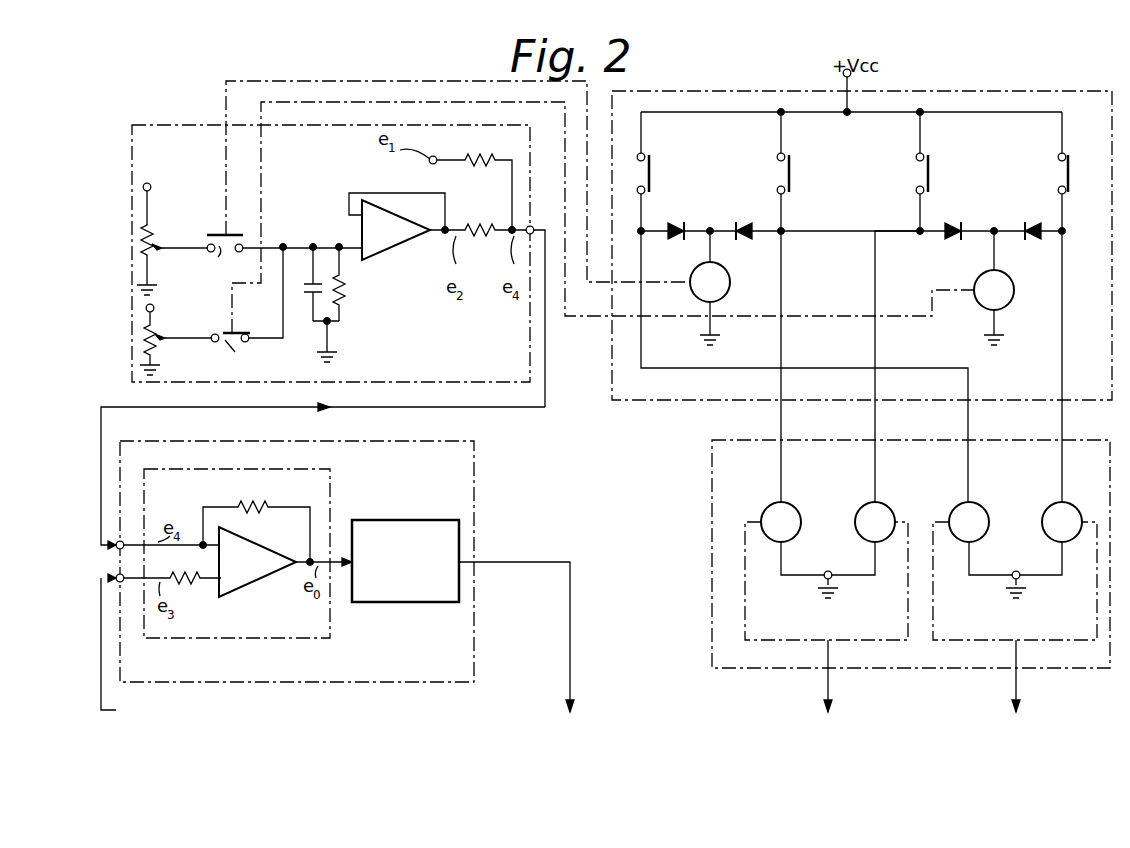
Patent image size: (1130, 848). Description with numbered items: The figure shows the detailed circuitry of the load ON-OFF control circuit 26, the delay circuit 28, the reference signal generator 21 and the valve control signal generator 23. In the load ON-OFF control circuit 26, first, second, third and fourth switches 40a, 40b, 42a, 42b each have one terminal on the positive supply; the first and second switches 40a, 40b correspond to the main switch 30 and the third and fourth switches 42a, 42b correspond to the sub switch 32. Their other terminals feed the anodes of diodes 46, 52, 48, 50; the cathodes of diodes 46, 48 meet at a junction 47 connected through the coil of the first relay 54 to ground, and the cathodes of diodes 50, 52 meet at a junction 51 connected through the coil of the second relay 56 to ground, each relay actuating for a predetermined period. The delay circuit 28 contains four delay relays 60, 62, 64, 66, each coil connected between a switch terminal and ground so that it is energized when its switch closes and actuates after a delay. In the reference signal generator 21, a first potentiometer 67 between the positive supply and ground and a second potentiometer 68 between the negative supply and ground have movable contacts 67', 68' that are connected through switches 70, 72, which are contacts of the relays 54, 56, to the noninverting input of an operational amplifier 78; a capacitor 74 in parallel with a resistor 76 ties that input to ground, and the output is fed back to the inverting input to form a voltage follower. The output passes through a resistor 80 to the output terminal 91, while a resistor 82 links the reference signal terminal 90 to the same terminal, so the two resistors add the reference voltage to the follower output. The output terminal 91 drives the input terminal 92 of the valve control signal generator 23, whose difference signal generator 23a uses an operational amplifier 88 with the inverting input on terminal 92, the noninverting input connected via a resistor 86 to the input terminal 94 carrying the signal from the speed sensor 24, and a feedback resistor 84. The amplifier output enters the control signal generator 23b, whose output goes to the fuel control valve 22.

The reference signal generator 21 is at (157, 123).
The valve control signal generator 23 is at (474, 442).
The difference signal generator 23a is at (256, 638).
The control signal generator 23b is at (392, 602).
The load ON-OFF control circuit 26 is at (1022, 88).
The delay circuit 28 is at (1076, 437).
The first switch 40a is at (844, 176).
The second switch 40b is at (980, 176).
The third switch 42a is at (706, 176).
The fourth switch 42b is at (1070, 170).
The semiconductor diode 46 is at (742, 242).
The junction 47 is at (712, 226).
The semiconductor diode 48 is at (674, 242).
The semiconductor diode 50 is at (1022, 242).
The junction 51 is at (996, 226).
The semiconductor diode 52 is at (952, 242).
The first relay 54 is at (727, 290).
The second relay 56 is at (1007, 310).
The delay relay 60 is at (794, 536).
The delay relay 62 is at (888, 505).
The delay relay 64 is at (980, 534).
The delay relay 66 is at (1077, 507).
The first potentiometer 67 is at (162, 224).
The movable contact 67' is at (179, 264).
The second potentiometer 68 is at (175, 332).
The movable contact 68' is at (184, 324).
The switch 70 is at (225, 261).
The switch 72 is at (239, 355).
The capacitor 74 is at (300, 322).
The resistor 76 is at (349, 289).
The operational amplifier 78 is at (398, 254).
The resistor 80 is at (480, 238).
The resistor 82 is at (470, 156).
The resistor 84 is at (250, 500).
The resistor 86 is at (170, 574).
The operational amplifier 88 is at (246, 590).
The reference signal terminal 90 is at (435, 163).
The output terminal 91 is at (532, 226).
The input terminal 92 is at (120, 537).
The input terminal 94 is at (120, 586).
The fuel control valve 22 is at (568, 660).
The speed sensor 24 is at (153, 734).
The main switch 30 is at (811, 687).
The sub switch 32 is at (993, 687).